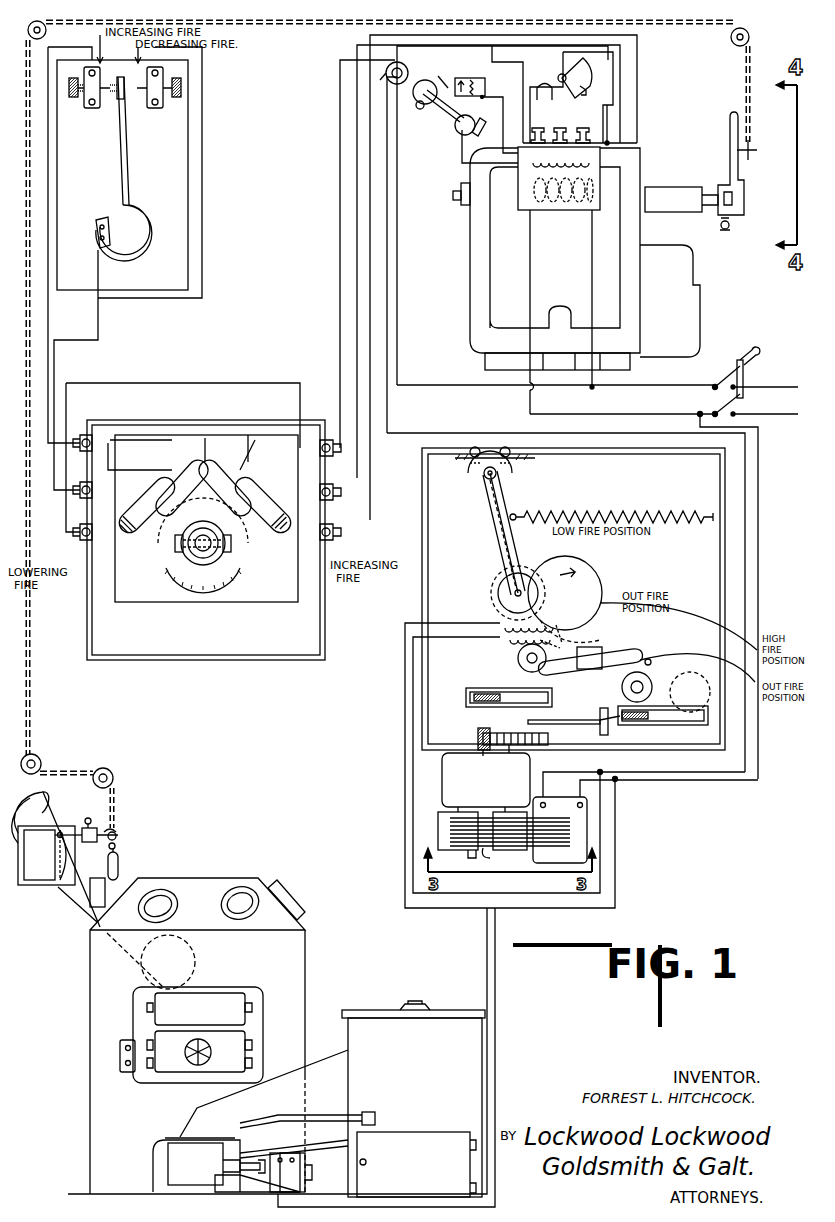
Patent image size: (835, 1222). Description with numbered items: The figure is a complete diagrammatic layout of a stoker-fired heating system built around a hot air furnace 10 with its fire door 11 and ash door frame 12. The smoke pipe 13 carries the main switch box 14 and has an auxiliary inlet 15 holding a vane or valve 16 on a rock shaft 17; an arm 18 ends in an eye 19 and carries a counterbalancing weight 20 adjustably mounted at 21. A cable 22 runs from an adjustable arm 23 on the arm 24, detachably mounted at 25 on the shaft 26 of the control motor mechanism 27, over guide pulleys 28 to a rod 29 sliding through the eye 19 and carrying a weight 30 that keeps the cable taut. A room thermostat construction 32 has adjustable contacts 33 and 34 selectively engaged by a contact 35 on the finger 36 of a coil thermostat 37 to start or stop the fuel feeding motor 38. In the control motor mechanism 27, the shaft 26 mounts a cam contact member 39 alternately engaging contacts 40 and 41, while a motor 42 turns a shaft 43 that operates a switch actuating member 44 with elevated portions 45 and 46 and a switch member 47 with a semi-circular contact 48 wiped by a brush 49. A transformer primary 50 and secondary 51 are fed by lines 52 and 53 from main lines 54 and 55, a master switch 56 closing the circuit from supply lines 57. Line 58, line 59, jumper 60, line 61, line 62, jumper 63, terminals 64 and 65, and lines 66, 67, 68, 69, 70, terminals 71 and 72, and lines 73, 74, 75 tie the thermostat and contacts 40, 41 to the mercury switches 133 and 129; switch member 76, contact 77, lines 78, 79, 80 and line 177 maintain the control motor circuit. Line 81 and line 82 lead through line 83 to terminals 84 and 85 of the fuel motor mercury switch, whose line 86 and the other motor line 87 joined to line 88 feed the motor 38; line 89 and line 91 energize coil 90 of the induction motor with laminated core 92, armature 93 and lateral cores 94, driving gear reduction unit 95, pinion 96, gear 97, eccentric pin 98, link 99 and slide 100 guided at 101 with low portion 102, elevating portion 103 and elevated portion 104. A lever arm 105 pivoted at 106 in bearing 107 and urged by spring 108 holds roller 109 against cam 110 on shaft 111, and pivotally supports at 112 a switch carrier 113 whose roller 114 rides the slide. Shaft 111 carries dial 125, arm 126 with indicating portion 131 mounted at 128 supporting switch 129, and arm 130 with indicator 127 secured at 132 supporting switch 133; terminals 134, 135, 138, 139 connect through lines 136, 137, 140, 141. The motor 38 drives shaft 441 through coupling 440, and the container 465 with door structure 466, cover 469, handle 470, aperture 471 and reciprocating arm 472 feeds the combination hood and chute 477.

The furnace 10 is at (292, 958).
The fire door 11 is at (235, 1050).
The ash door frame 12 is at (155, 1160).
The smoke pipe 13 is at (125, 882).
The main switch box 14 is at (258, 660).
The auxiliary inlet 15 is at (22, 888).
The vane or valve 16 is at (41, 870).
The rock shaft 17 is at (64, 828).
The arm 18 is at (118, 846).
The eye 19 is at (121, 840).
The valve counterbalancing weight 20 is at (125, 830).
The adjustable mounting 21 is at (90, 826).
The cable 22 is at (753, 110).
The adjustable arm 23 is at (752, 147).
The arm 24 is at (739, 176).
The detachable mounting 25 is at (728, 230).
The shaft 26 is at (707, 190).
The control motor mechanism 27 is at (492, 292).
The guide pulleys 28 is at (47, 31).
The rod 29 is at (117, 834).
The weight 30 is at (120, 862).
The thermostat construction 32 is at (176, 177).
The adjustable contact 33 is at (166, 96).
The adjustable contact 34 is at (84, 96).
The contact 35 is at (123, 98).
The finger 36 is at (119, 158).
The coil thermostat 37 is at (154, 222).
The fuel feeding motor 38 is at (301, 1178).
The cam contact member 39 is at (577, 71).
The contact 40 is at (584, 91).
The contact 41 is at (548, 99).
The motor 42 is at (692, 281).
The shaft 43 is at (448, 108).
The switch actuating member 44 is at (418, 97).
The elevated portion 45 is at (418, 109).
The elevated portion 46 is at (440, 78).
The switch member 47 is at (410, 62).
The semi-circular contact 48 is at (396, 62).
The brush 49 is at (398, 73).
The transformer primary 50 is at (556, 212).
The secondary 51 is at (530, 172).
The line 52 is at (592, 280).
The line 53 is at (530, 291).
The main line 54 is at (680, 387).
The main line 55 is at (702, 410).
The master switch 56 is at (748, 371).
The supply lines 57 is at (770, 412).
The line 58 is at (465, 165).
The line 59 is at (356, 190).
The jumper 60 is at (206, 438).
The line 61 is at (98, 306).
The line 62 is at (48, 294).
The jumper 63 is at (256, 440).
The terminal 64 is at (284, 512).
The terminal 65 is at (283, 528).
The line 66 is at (327, 467).
The line 67 is at (340, 272).
The line 68 is at (521, 123).
The line 69 is at (202, 276).
The line 70 is at (108, 536).
The terminal 71 is at (133, 510).
The terminal 72 is at (120, 505).
The line 73 is at (118, 565).
The line 74 is at (369, 139).
The line 75 is at (606, 126).
The switch member 76 is at (456, 80).
The contact 77 is at (466, 78).
The line 78 is at (480, 80).
The line 79 is at (472, 103).
The line 80 is at (610, 46).
The line 81 is at (432, 386).
The line 82 is at (412, 436).
The line 83 is at (410, 678).
The terminal 84 is at (526, 683).
The terminal 85 is at (582, 638).
The line 86 is at (462, 636).
The wire 87 is at (498, 1079).
The line 88 is at (703, 783).
The line 89 is at (561, 779).
The coil 90 is at (581, 849).
The line 91 is at (580, 794).
The laminated core 92 is at (666, 779).
The rotor or armature 93 is at (484, 849).
The lateral laminated cores 94 is at (440, 823).
The gear reduction unit 95 is at (452, 781).
The pinion 96 is at (478, 742).
The gear 97 is at (546, 732).
The eccentric pin 98 is at (478, 715).
The link 99 is at (590, 724).
The slide 100 is at (596, 729).
The guide 101 is at (470, 698).
The low portion 102 is at (682, 682).
The elevating portion 103 is at (646, 659).
The elevated portion 104 is at (633, 641).
The lever arm 105 is at (497, 541).
The pivot 106 is at (476, 484).
The adjustably mounted bearing 107 is at (514, 466).
The spring 108 is at (611, 516).
The roller 109 is at (540, 580).
The cam 110 is at (604, 591).
The shaft 111 is at (203, 556).
The pivot 112 is at (517, 663).
The switch carrier 113 is at (530, 688).
The roller 114 is at (650, 680).
The dial 125 is at (180, 555).
The arm 126 is at (170, 530).
The indicator 127 is at (172, 563).
The adjustable mounting 128 is at (165, 535).
The mercury tube switch 129 is at (225, 479).
The arm 130 is at (248, 530).
The indicating portion 131 is at (218, 565).
The adjustable mounting 132 is at (236, 578).
The mercury switch 133 is at (217, 485).
The terminal 134 is at (202, 491).
The terminal 135 is at (182, 479).
The line 136 is at (152, 433).
The line 137 is at (130, 470).
The terminal 138 is at (258, 460).
The terminal 139 is at (257, 465).
The line 140 is at (248, 436).
The line 141 is at (277, 457).
The line 177 is at (492, 76).
The coupling 440 is at (252, 1153).
The shaft 441 is at (228, 1160).
The container 465 is at (357, 1043).
The door structure 466 is at (436, 1143).
The cover 469 is at (452, 1019).
The handle 470 is at (420, 1009).
The aperture 471 is at (369, 1112).
The arm 472 is at (287, 1115).
The combination hood and chute 477 is at (197, 1106).